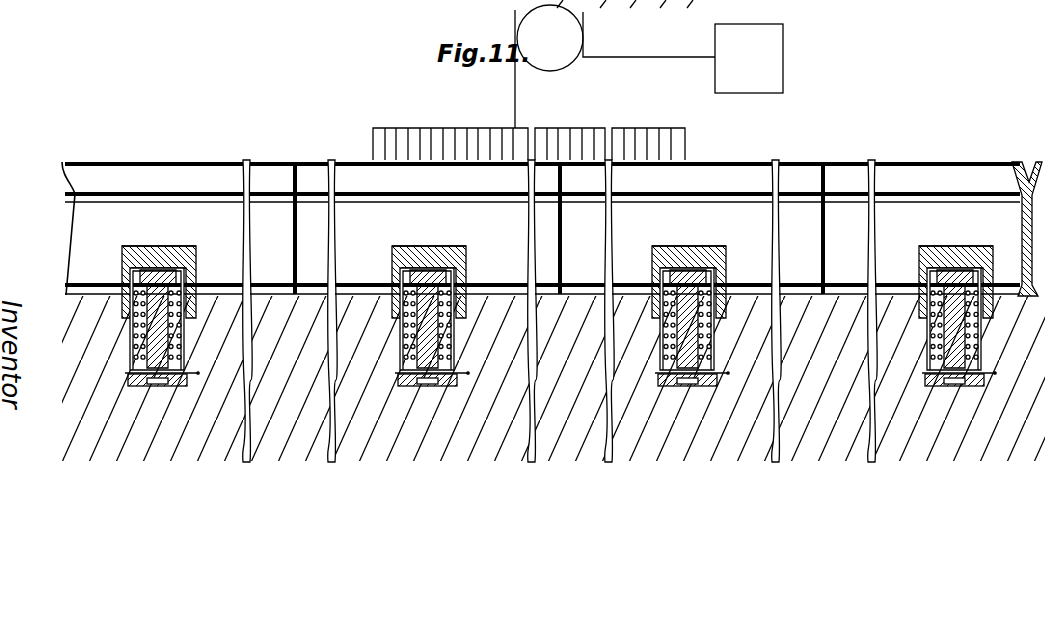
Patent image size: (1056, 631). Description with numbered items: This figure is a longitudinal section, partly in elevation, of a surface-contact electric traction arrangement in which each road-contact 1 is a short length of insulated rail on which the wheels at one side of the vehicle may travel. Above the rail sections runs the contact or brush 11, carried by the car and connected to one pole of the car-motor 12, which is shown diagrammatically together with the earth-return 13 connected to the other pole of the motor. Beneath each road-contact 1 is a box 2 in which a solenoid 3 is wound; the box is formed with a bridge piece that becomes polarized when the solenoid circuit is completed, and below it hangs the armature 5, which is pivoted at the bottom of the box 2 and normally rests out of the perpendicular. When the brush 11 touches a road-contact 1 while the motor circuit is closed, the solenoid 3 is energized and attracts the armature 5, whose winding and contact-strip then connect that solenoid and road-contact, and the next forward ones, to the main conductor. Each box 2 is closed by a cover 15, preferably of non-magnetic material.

The road-contact 1 is at (541, 228).
The box 2 is at (130, 328).
The solenoid 3 is at (135, 350).
The armature 5 is at (158, 323).
The contact or brush 11 is at (566, 135).
The car-motor 12 is at (615, 66).
The earth-return 13 is at (749, 58).
The cover 15 is at (196, 258).